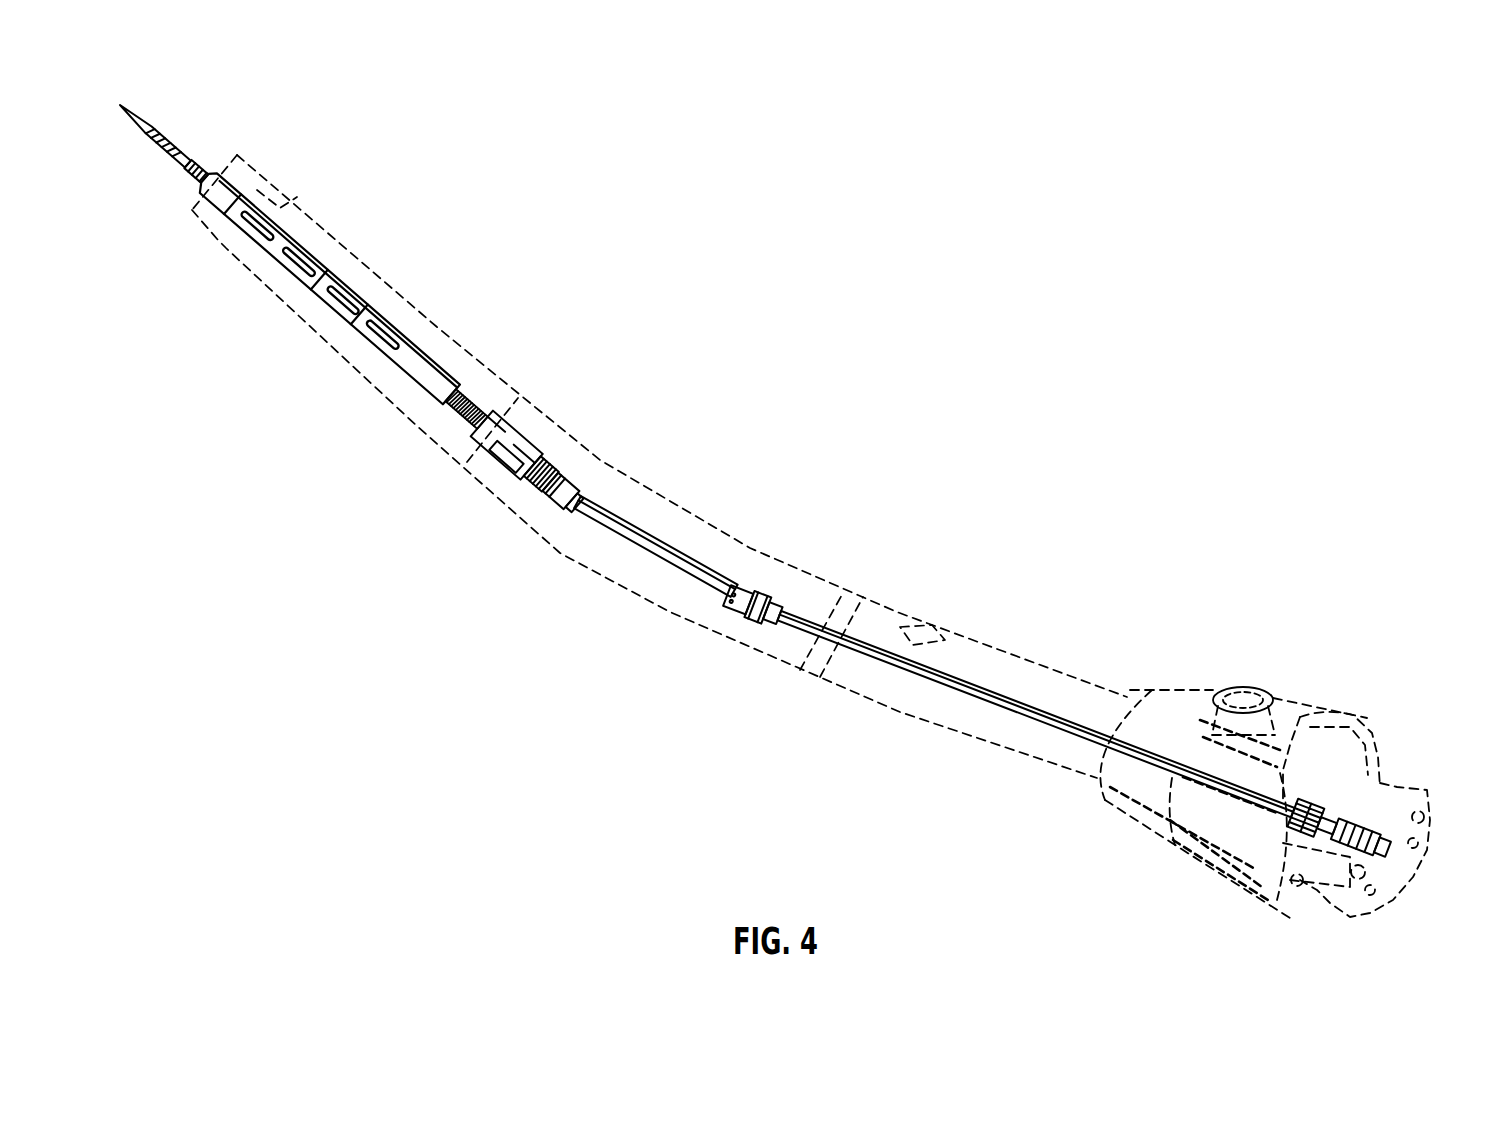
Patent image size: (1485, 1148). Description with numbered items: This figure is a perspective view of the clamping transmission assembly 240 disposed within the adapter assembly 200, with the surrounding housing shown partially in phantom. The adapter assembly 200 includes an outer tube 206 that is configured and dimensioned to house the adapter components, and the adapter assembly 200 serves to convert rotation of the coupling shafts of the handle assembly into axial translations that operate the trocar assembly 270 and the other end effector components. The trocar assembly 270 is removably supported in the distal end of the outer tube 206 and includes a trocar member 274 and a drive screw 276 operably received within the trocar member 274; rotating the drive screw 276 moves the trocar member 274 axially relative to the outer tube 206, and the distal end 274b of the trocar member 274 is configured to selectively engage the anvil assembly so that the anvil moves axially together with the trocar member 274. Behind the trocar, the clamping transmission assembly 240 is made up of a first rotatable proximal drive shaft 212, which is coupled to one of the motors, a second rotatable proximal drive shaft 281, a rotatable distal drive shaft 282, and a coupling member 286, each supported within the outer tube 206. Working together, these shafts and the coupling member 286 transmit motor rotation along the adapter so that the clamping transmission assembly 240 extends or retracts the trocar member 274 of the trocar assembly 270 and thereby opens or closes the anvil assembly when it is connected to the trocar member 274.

The adapter assembly 200 is at (1047, 673).
The outer tube 206 is at (893, 610).
The first rotatable proximal drive shaft 212 is at (1383, 823).
The clamping transmission assembly 240 is at (722, 510).
The trocar assembly 270 is at (360, 277).
The trocar member 274 is at (157, 113).
The distal end of trocar member 274b is at (183, 158).
The drive screw 276 is at (467, 398).
The second rotatable proximal drive shaft 281 is at (1043, 720).
The rotatable distal drive shaft 282 is at (643, 555).
The coupling member 286 is at (523, 456).